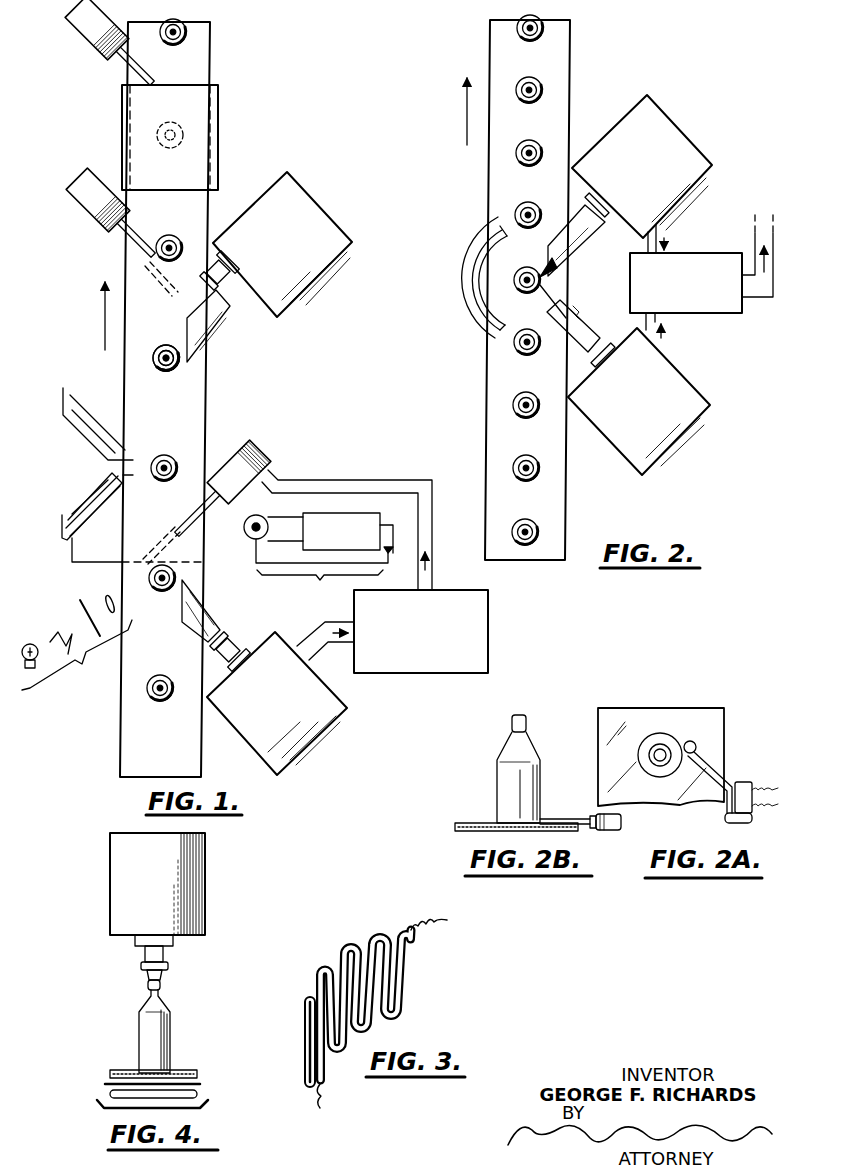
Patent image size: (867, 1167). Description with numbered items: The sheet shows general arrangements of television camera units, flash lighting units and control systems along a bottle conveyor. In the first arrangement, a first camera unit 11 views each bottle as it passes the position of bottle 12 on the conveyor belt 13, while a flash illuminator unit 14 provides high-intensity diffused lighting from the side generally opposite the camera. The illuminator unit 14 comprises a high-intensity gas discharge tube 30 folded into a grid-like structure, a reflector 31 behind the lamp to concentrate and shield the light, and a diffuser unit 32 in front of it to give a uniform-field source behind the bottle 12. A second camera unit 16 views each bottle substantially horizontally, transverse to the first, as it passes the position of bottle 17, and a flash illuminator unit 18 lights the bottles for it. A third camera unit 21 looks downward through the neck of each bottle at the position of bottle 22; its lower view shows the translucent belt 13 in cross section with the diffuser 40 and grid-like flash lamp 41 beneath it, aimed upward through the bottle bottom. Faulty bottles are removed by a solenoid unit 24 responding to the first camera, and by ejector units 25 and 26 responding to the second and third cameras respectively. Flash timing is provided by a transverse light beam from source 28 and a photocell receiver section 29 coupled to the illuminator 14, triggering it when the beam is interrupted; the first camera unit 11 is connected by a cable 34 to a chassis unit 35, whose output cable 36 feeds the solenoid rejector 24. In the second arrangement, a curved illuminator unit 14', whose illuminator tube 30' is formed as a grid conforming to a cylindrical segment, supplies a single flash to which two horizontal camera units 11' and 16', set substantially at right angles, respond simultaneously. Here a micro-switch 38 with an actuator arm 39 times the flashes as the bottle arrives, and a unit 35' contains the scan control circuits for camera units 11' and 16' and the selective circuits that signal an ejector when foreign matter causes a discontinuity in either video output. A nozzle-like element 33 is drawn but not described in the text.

In FIG. 1, the first camera unit 11 is at (282, 703).
In FIG. 2, the horizontal camera unit 11' is at (650, 394).
In FIG. 1, the bottle 12 is at (149, 580).
In FIG. 1, the conveyor belt 13 is at (200, 62).
In FIG. 2, the conveyor belt 13 is at (490, 372).
In FIG. 4, the conveyor belt 13 is at (176, 1070).
In FIG. 1, the flash illuminator unit 14 is at (66, 506).
In FIG. 2, the illuminator unit 14' is at (453, 277).
In FIG. 1, the second camera unit 16 is at (280, 267).
In FIG. 2, the horizontal camera unit 16' is at (646, 174).
In FIG. 1, the bottle 17 is at (172, 366).
In FIG. 1, the flash illuminator unit 18 is at (62, 430).
In FIG. 1, the third camera unit 21 is at (232, 92).
In FIG. 4, the third camera unit 21 is at (210, 882).
In FIG. 1, the bottle 22 is at (185, 135).
In FIG. 4, the bottle 22 is at (138, 1020).
In FIG. 1, the solenoid unit 24 is at (266, 450).
In FIG. 1, the ejector unit 25 is at (78, 214).
In FIG. 1, the ejector unit 26 is at (80, 45).
In FIG. 1, the light beam source 28 is at (77, 643).
In FIG. 1, the photocell receiver section 29 is at (318, 559).
In FIG. 1, the gas discharge tube 30 is at (65, 514).
In FIG. 2, the illuminator tube 30' is at (462, 278).
In FIG. 3, the illuminator tube 30' is at (366, 1013).
In FIG. 1, the reflector 31 is at (66, 510).
In FIG. 1, the diffuser unit 32 is at (72, 548).
In FIG. 1, the nozzle 33 is at (230, 628).
In FIG. 1, the cable 34 is at (314, 628).
In FIG. 1, the chassis unit 35 is at (421, 646).
In FIG. 2, the control unit 35' is at (701, 284).
In FIG. 1, the output cable 36 is at (345, 480).
In FIG. 2, the micro-switch 38 is at (586, 310).
In FIG. 2B, the micro-switch 38 is at (622, 826).
In FIG. 2A, the micro-switch 38 is at (745, 786).
In FIG. 2, the actuator arm 39 is at (562, 290).
In FIG. 2B, the actuator arm 39 is at (546, 822).
In FIG. 2A, the actuator arm 39 is at (706, 768).
In FIG. 4, the diffuser 40 is at (108, 1084).
In FIG. 4, the grid-like flash lamp 41 is at (112, 1094).